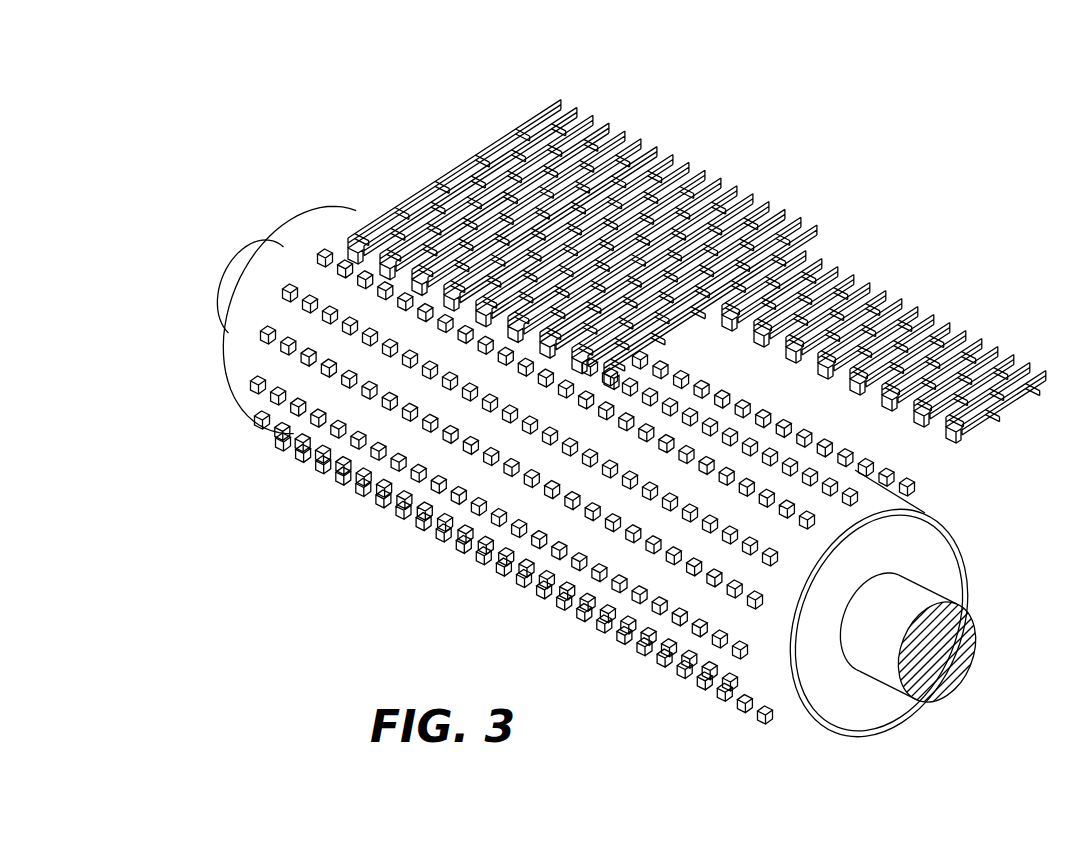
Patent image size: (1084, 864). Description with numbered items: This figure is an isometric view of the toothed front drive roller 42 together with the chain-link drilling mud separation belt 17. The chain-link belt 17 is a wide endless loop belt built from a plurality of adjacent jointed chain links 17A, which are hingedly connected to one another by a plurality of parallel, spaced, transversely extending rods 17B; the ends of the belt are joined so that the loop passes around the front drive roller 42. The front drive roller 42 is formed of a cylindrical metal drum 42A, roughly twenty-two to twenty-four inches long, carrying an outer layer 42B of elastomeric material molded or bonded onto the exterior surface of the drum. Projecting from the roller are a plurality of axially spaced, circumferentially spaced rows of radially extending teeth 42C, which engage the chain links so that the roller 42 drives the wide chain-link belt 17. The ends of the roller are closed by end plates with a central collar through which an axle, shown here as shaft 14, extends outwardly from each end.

The shaft 14 is at (978, 650).
The chain-link belt 17 is at (756, 158).
The jointed chain links 17A is at (572, 97).
The transversely extending rods 17B is at (350, 210).
The front drive roller 42 is at (996, 588).
The cylindrical metal drum 42A is at (947, 557).
The outer layer of elastomeric material 42B is at (937, 518).
The radially extending teeth 42C is at (852, 455).